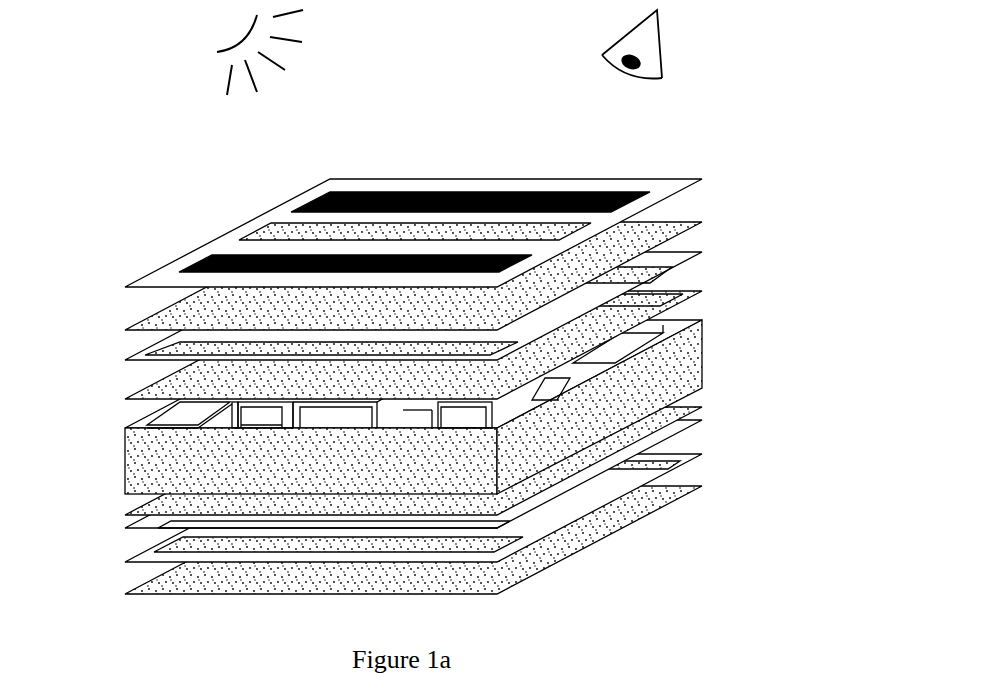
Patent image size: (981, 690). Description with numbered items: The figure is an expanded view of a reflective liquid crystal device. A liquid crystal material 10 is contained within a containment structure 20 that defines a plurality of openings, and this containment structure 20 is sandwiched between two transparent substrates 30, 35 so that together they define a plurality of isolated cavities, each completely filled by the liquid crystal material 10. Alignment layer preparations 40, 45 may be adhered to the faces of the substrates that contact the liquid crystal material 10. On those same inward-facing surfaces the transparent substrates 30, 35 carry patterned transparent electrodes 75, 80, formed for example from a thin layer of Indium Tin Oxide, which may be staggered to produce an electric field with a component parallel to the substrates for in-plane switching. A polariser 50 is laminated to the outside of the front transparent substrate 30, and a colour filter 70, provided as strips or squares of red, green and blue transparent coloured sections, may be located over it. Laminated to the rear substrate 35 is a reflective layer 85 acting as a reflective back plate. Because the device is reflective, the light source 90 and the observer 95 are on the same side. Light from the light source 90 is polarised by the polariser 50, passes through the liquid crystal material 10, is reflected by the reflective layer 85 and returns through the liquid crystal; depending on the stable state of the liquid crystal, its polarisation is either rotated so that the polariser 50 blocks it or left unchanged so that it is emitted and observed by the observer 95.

The liquid crystal material 10 is at (197, 408).
The containment structure 20 is at (217, 462).
The transparent substrate 30 is at (195, 366).
The transparent substrate 35 is at (198, 527).
The alignment layer preparation 40 is at (648, 305).
The alignment layer preparation 45 is at (650, 420).
The polariser 50 is at (220, 309).
The colour filter 70 is at (215, 262).
The patterned transparent electrode 75 is at (215, 346).
The patterned transparent electrode 80 is at (217, 543).
The reflective layer 85 is at (217, 577).
The light source 90 is at (222, 30).
The observer 95 is at (588, 40).